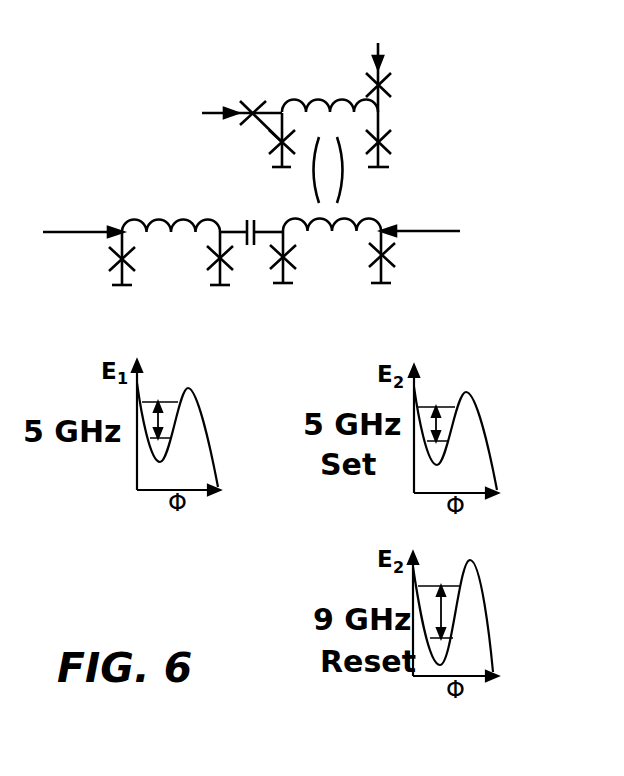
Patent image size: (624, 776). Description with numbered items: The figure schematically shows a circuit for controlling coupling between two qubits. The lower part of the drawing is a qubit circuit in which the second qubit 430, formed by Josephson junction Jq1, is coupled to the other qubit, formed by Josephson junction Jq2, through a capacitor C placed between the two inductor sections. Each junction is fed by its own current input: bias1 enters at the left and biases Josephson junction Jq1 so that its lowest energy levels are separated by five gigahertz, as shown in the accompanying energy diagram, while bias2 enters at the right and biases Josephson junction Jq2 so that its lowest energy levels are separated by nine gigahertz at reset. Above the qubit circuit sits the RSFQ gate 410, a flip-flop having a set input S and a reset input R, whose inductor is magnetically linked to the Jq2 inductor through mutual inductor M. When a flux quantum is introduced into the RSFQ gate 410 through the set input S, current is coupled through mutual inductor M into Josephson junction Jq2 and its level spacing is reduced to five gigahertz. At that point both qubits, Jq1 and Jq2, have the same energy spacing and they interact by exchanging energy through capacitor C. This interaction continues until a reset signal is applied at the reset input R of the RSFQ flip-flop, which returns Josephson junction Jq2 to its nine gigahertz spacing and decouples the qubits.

The RSFQ gate 410 is at (345, 120).
The second qubit 430 is at (259, 263).
The set input S is at (242, 106).
The reset input R is at (364, 102).
The mutual inductor M is at (328, 170).
The capacitor C is at (251, 212).
The Josephson junction Jq1 is at (198, 269).
The Josephson junction Jq2 is at (309, 267).
The element bias1 is at (69, 252).
The element bias2 is at (442, 248).